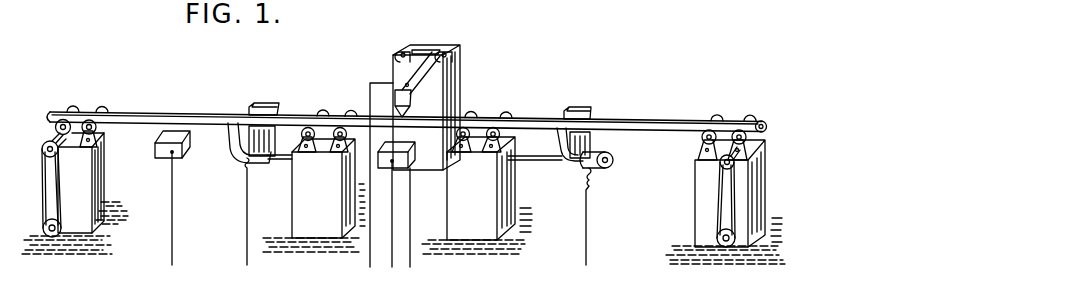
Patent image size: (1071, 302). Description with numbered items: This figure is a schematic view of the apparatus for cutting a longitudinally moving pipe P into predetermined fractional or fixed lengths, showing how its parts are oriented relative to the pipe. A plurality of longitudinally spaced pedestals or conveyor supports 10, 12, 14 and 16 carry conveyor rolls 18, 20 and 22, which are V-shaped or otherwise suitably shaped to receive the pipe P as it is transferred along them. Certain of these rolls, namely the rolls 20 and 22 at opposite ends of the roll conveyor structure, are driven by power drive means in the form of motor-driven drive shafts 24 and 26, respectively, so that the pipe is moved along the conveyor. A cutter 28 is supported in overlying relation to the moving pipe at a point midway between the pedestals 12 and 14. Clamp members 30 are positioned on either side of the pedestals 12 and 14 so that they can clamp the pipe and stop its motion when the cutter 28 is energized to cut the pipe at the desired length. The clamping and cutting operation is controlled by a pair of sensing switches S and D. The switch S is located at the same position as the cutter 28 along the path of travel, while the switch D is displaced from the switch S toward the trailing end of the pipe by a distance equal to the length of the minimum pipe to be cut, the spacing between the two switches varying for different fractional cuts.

The pedestal 10 is at (78, 227).
The pedestal 12 is at (318, 229).
The pedestal 14 is at (468, 235).
The pedestal 16 is at (697, 201).
The conveyor rolls 18 is at (98, 106).
The conveyor roll 20 is at (72, 106).
The conveyor roll 22 is at (752, 115).
The motor-driven drive shaft 24 is at (43, 226).
The motor-driven drive shaft 26 is at (726, 247).
The cutter 28 is at (408, 112).
The clamp members 30 is at (265, 103).
The sensing switch D is at (156, 149).
The sensing switch S is at (414, 147).
The pipe P is at (653, 121).